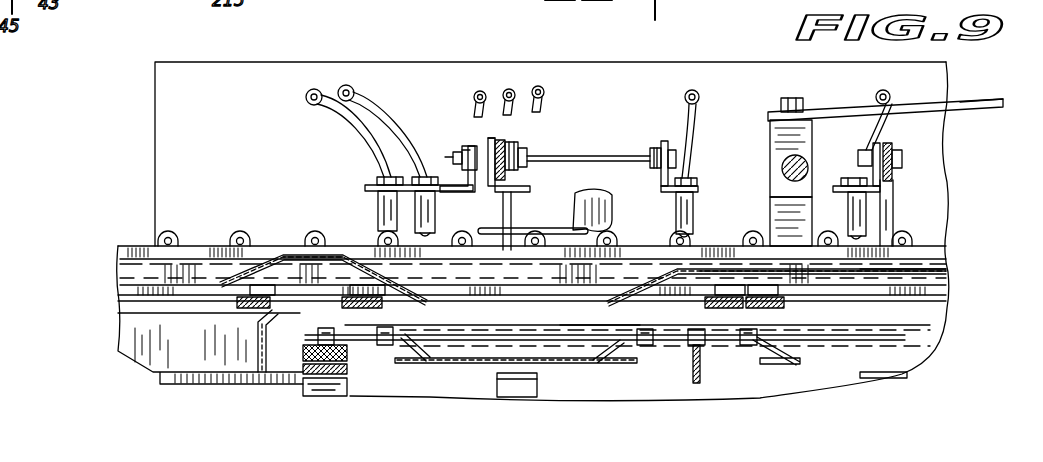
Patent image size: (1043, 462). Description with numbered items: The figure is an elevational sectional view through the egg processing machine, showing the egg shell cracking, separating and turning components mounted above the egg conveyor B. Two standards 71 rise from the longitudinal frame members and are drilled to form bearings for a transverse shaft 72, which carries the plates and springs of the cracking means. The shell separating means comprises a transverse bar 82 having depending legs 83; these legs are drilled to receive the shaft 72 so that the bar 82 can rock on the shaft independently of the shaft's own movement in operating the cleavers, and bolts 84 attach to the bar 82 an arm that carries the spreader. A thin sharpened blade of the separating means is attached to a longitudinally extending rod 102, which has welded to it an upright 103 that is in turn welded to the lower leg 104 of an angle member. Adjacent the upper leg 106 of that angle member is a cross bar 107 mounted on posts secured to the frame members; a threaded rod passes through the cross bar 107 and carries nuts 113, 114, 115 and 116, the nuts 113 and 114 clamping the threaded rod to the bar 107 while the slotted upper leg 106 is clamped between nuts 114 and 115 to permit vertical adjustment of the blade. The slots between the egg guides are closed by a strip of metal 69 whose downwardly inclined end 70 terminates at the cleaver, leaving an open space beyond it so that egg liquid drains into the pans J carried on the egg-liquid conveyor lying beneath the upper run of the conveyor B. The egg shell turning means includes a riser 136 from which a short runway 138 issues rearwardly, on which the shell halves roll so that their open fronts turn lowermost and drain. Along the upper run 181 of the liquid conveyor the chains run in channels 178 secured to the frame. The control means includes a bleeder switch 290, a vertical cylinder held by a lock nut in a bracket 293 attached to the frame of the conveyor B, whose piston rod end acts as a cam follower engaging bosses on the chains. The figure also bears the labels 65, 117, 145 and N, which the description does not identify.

The hatched support blocks 65 is at (377, 307).
The strip of metal 69 is at (885, 276).
The downwardly inclined end 70 is at (627, 300).
The standards 71 is at (778, 222).
The transverse shaft 72 is at (782, 166).
The transverse bar 82 is at (810, 112).
The depending legs 83 is at (785, 140).
The bolts 84 is at (793, 98).
The longitudinally extending rod 102 is at (486, 227).
The upright 103 is at (503, 207).
The lower leg 104 is at (520, 190).
The upper leg 106 is at (490, 138).
The cross bar 107 is at (515, 146).
The nut 113 is at (520, 168).
The nut 114 is at (505, 140).
The nut 115 is at (483, 137).
The nut 116 is at (453, 167).
The arm end 117 is at (984, 100).
The riser 136 is at (342, 270).
The short runway 138 is at (296, 252).
The stop 145 is at (460, 153).
The channels 178 is at (348, 358).
The upper run 181 is at (305, 350).
The bleeder switch 290 is at (425, 212).
The bracket 293 is at (366, 186).
The pans J is at (515, 350).
The egg conveyor B is at (597, 258).
The track N is at (952, 271).